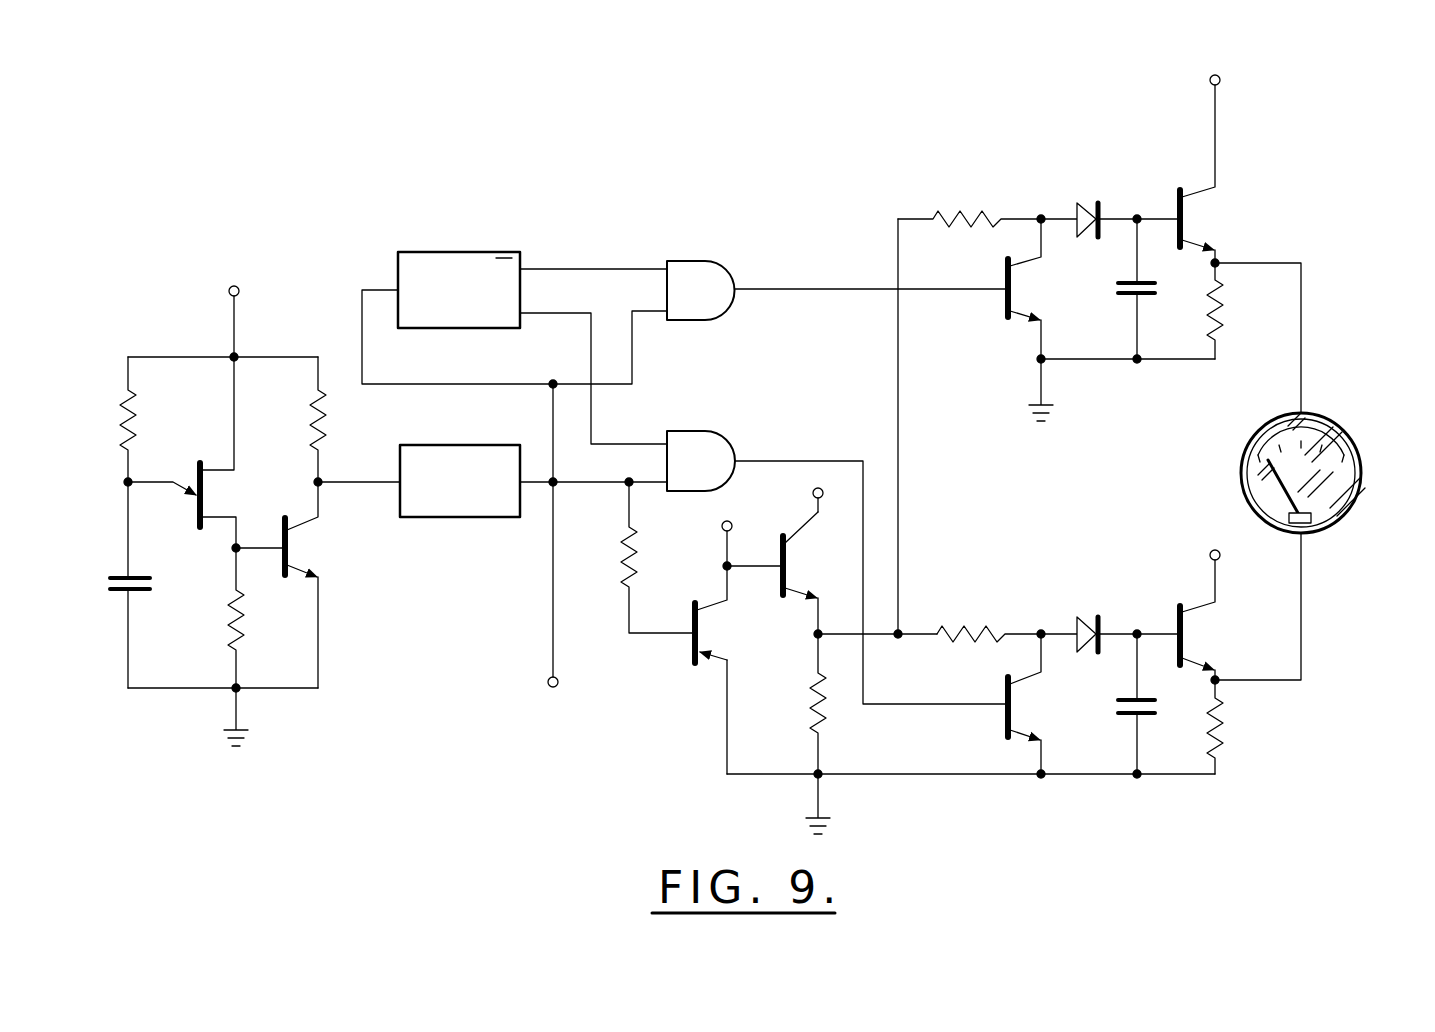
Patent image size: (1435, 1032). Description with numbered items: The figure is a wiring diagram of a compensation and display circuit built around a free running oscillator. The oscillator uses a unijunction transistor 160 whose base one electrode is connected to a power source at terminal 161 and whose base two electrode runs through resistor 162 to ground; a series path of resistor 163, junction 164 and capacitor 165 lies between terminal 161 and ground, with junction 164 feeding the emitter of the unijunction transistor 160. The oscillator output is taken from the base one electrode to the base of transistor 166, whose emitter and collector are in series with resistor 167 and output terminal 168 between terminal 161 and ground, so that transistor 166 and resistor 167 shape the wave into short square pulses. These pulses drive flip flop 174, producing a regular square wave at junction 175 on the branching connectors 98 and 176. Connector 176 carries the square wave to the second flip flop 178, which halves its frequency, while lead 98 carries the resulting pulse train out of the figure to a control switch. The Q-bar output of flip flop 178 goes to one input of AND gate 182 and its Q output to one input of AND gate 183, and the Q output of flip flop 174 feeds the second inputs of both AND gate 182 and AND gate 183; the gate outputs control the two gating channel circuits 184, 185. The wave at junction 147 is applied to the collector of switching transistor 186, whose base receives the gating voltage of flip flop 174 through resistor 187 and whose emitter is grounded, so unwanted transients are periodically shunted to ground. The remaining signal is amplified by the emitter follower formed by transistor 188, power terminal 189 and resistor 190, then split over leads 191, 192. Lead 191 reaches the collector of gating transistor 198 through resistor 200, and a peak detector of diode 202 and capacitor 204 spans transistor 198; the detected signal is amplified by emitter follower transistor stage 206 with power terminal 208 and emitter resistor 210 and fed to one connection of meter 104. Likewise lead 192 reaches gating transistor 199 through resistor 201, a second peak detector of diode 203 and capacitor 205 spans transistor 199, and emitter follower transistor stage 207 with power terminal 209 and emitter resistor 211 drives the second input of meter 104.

The lead 98 is at (553, 650).
The meter 104 is at (1345, 437).
The junction 147 is at (722, 526).
The unijunction transistor 160 is at (200, 463).
The terminal 161 is at (234, 286).
The resistor 162 is at (236, 622).
The resistor 163 is at (128, 422).
The junction 164 is at (128, 482).
The capacitor 165 is at (110, 590).
The transistor 166 is at (287, 548).
The resistor 167 is at (318, 418).
The output terminal 168 is at (318, 482).
The flip flop 174 is at (425, 517).
The junction 175 is at (553, 482).
The connector 176 is at (415, 384).
The flip flop 178 is at (460, 252).
The AND gate 182 is at (690, 261).
The AND gate 183 is at (690, 431).
The gating channel circuit 184 is at (1049, 157).
The gating channel circuit 185 is at (1049, 600).
The switching transistor 186 is at (697, 640).
The resistor 187 is at (629, 540).
The transistor 188 is at (785, 572).
The power terminal 189 is at (813, 493).
The resistor 190 is at (818, 712).
The lead 191 is at (898, 410).
The lead 192 is at (898, 634).
The gating transistor 198 is at (1008, 310).
The gating transistor 199 is at (1008, 718).
The resistor 200 is at (967, 219).
The resistor 201 is at (965, 646).
The diode 202 is at (1097, 203).
The diode 203 is at (1097, 617).
The capacitor 204 is at (1118, 290).
The capacitor 205 is at (1118, 715).
The emitter follower transistor stage 206 is at (1182, 219).
The emitter follower transistor stage 207 is at (1182, 640).
The power terminal 208 is at (1215, 75).
The power terminal 209 is at (1213, 550).
The emitter resistor 210 is at (1215, 333).
The emitter resistor 211 is at (1215, 720).